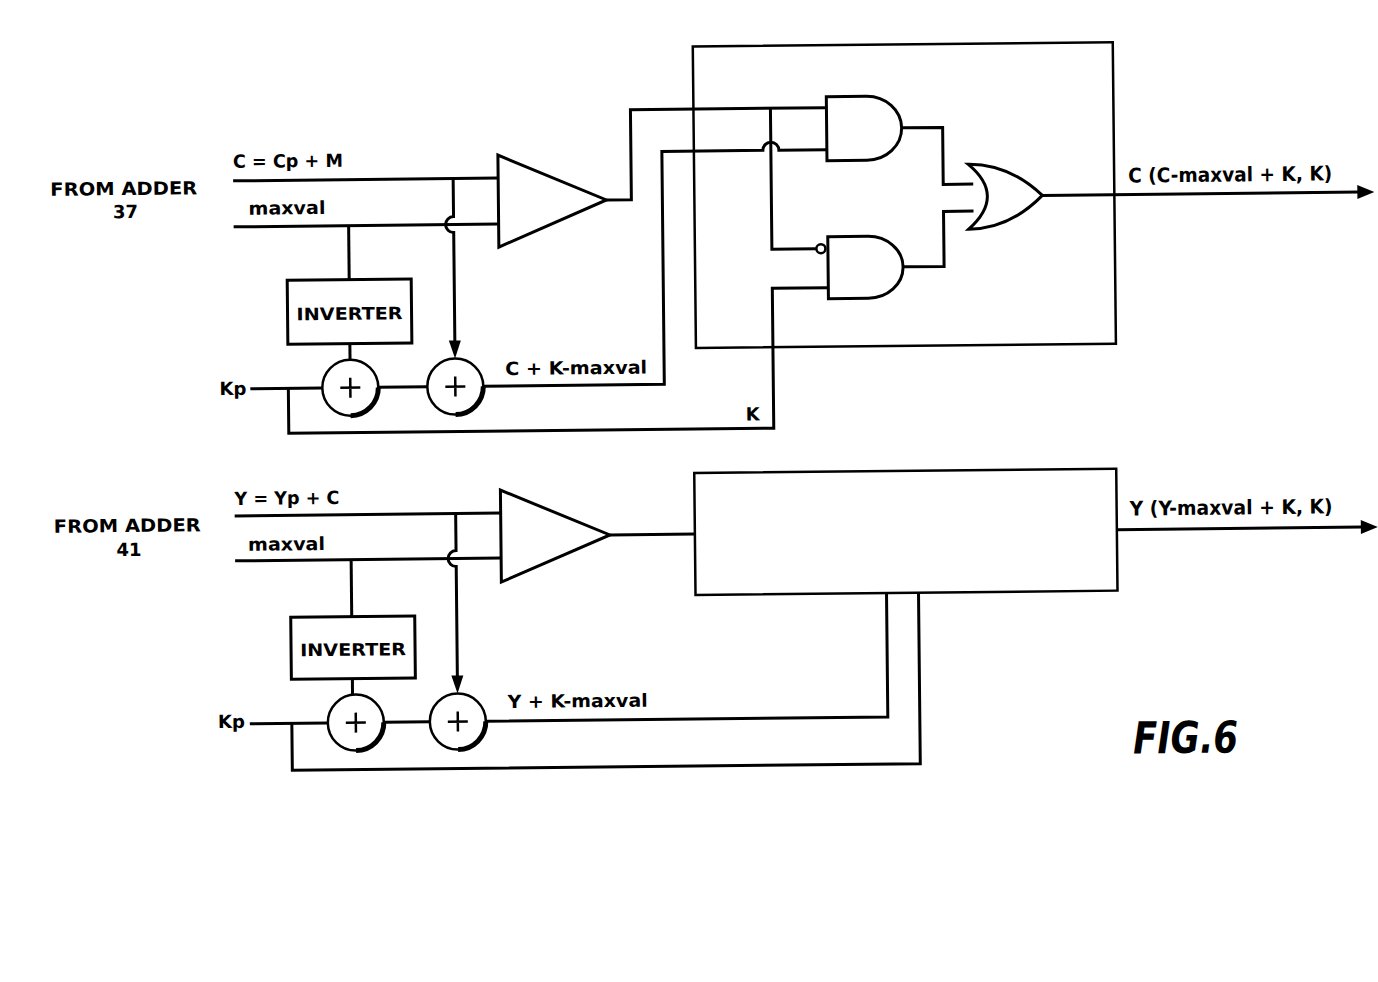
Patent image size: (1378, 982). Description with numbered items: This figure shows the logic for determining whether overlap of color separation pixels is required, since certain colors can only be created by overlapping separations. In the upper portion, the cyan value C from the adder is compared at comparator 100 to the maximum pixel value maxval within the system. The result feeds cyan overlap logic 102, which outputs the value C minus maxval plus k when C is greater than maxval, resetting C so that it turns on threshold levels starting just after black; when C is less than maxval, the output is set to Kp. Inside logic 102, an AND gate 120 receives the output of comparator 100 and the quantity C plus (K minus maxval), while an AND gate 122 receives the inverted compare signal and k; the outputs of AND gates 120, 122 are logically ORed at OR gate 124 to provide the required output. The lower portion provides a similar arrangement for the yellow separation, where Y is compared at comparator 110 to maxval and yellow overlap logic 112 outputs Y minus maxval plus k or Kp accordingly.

The comparator 100 is at (560, 177).
The cyan overlap logic 102 is at (1117, 110).
The comparator 110 is at (557, 511).
The yellow overlap logic 112 is at (1059, 474).
The AND gate 120 is at (873, 97).
The AND gate 122 is at (871, 300).
The OR gate 124 is at (1011, 226).